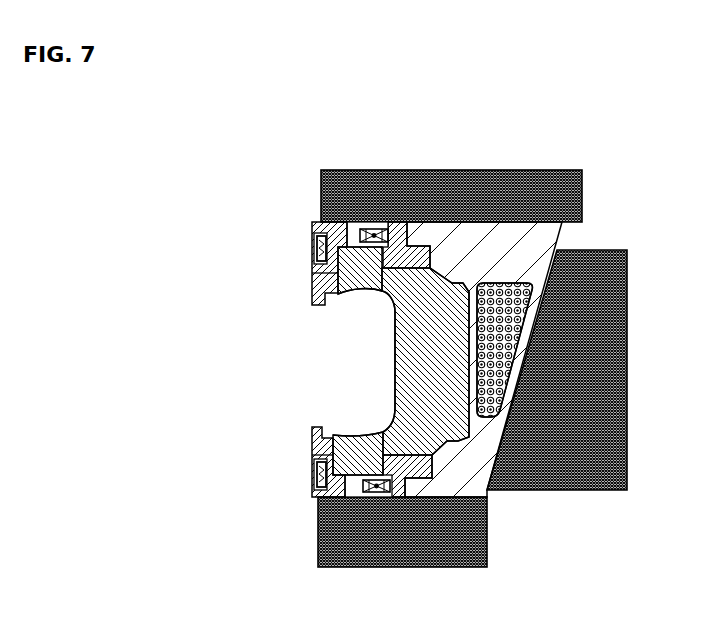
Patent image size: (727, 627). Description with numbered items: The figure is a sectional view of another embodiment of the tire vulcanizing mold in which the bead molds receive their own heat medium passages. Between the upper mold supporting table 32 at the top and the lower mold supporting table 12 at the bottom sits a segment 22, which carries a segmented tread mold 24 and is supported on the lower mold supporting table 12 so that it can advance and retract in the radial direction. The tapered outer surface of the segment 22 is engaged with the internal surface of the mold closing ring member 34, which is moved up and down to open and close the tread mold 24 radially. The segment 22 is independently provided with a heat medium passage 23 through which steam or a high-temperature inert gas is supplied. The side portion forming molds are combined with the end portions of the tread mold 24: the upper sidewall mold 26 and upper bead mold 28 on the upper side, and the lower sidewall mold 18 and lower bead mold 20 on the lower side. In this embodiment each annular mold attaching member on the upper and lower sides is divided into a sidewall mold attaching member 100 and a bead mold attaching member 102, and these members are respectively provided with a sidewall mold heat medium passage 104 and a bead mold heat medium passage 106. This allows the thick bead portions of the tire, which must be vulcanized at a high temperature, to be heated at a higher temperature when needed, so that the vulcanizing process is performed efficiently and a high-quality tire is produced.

The lower mold supporting table 12 is at (340, 532).
The lower sidewall mold 18 is at (358, 436).
The lower bead mold 20 is at (312, 430).
The segment 22 is at (562, 232).
The heat medium passage 23 is at (480, 365).
The segmented tread mold 24 is at (400, 350).
The upper sidewall mold 26 is at (360, 287).
The upper bead mold 28 is at (312, 292).
The upper mold supporting table 32 is at (322, 185).
The mold closing ring member 34 is at (620, 402).
The sidewall mold attaching member 100 is at (425, 240).
The bead mold attaching member 102 is at (313, 243).
The sidewall mold heat medium passage 104 is at (380, 228).
The bead mold heat medium passage 106 is at (313, 252).